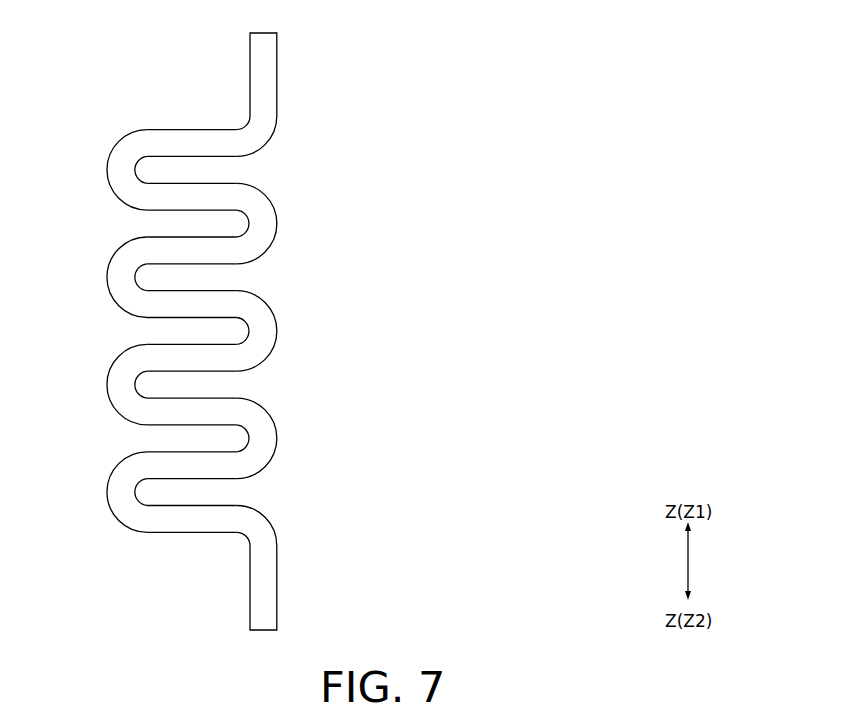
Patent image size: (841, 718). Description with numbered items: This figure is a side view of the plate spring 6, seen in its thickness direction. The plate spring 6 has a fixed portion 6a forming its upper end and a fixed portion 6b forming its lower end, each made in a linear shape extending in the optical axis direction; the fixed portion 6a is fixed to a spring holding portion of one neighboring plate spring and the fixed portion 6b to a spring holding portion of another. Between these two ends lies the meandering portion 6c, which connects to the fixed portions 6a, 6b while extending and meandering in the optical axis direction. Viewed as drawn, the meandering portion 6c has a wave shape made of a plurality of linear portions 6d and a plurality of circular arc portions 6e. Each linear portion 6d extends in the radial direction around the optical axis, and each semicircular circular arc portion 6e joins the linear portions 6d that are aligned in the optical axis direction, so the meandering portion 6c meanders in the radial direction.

The plate spring 6 is at (416, 258).
The fixed portion 6a is at (277, 80).
The fixed portion 6b is at (278, 590).
The meandering portion 6c is at (277, 330).
The linear portions 6d is at (188, 129).
The circular arc portions 6e is at (106, 171).